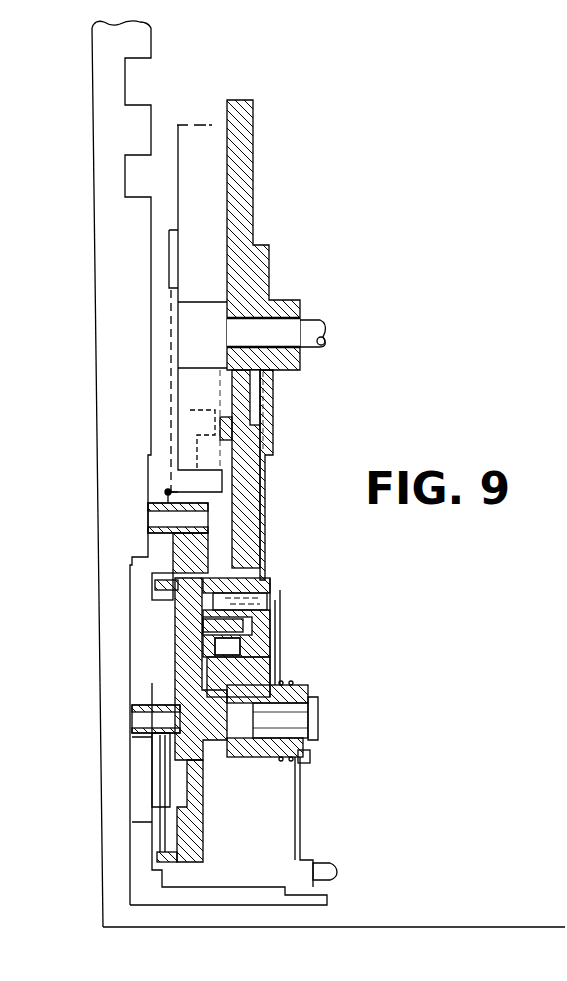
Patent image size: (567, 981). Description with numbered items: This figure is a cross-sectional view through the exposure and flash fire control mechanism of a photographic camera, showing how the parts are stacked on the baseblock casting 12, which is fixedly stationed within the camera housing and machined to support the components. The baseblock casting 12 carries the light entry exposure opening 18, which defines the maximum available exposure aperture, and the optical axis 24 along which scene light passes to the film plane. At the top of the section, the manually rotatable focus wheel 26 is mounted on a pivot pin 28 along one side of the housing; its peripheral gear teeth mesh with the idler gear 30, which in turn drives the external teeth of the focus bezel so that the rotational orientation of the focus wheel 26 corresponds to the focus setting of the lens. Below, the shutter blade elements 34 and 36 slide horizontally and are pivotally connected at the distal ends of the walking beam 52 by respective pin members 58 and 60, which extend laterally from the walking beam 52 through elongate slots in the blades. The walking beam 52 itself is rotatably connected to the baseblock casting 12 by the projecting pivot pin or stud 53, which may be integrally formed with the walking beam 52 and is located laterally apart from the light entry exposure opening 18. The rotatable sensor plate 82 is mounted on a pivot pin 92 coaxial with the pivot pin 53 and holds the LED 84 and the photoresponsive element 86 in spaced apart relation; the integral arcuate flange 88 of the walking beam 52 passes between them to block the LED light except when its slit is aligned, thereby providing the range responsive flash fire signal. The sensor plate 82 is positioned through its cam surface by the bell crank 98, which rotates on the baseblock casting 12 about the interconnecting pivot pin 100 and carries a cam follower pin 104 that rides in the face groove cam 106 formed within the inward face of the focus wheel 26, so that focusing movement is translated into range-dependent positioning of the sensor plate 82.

The baseblock casting 12 is at (93, 205).
The light entry exposure opening 18 is at (128, 655).
The central optical axis 24 is at (128, 720).
The focus wheel 26 is at (247, 192).
The pivot pin 28 is at (313, 322).
The idler gear 30 is at (265, 525).
The shutter blade element 34 is at (205, 770).
The shutter blade element 36 is at (157, 750).
The walking beam 52 is at (185, 785).
The pivot pin 53 is at (130, 705).
The pin member 58 is at (157, 856).
The pin member 60 is at (148, 582).
The sensor plate 82 is at (272, 585).
The LED 84 is at (258, 580).
The photoresponsive element 86 is at (235, 648).
The arcuate flange 88 is at (243, 625).
The pivot pin 92 is at (320, 722).
The bell crank 98 is at (165, 490).
The pivot pin 100 is at (150, 518).
The cam follower pin 104 is at (225, 425).
The face groove cam 106 is at (242, 497).